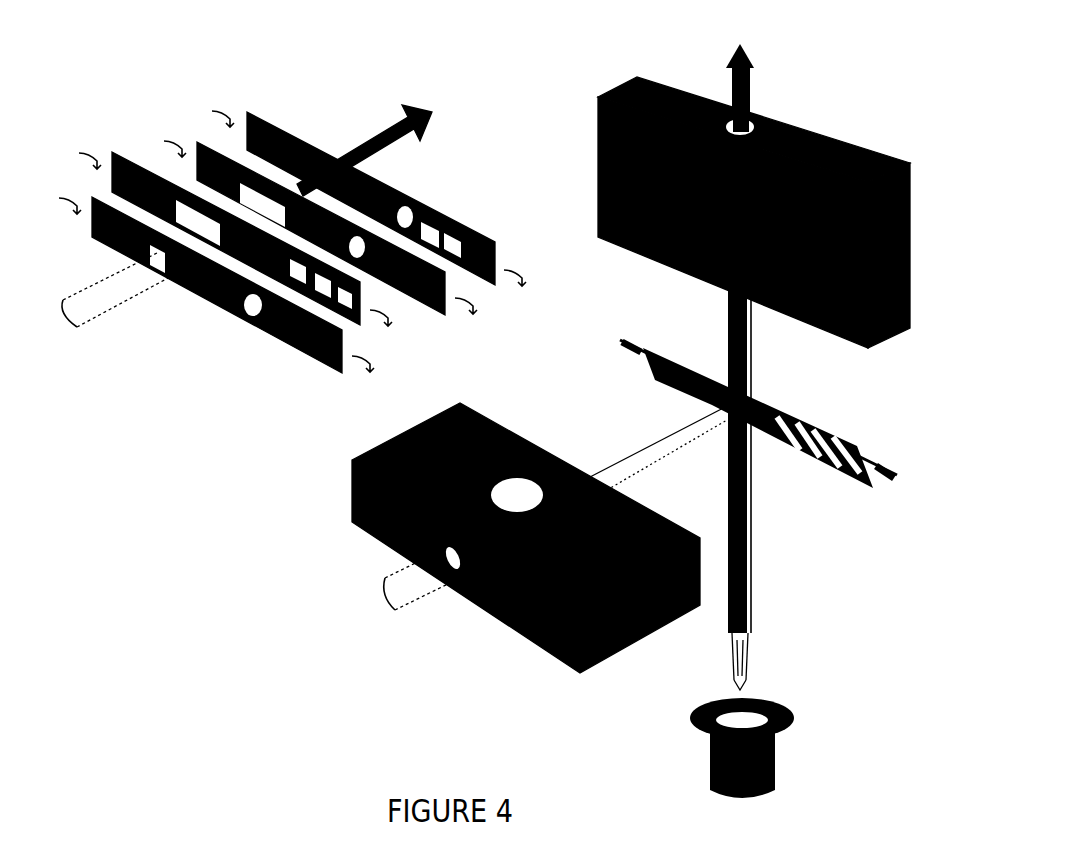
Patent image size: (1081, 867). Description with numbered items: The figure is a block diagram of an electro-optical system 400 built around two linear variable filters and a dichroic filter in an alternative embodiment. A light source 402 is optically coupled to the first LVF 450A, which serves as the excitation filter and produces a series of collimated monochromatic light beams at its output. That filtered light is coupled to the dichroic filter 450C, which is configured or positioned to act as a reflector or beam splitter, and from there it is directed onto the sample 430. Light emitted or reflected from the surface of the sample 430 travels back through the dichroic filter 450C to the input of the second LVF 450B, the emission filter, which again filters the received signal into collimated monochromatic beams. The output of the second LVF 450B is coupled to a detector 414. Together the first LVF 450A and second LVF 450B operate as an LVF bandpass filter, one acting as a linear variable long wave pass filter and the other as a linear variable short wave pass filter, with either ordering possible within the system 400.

The electro-optical system 400 is at (500, 90).
The light source 402 is at (403, 605).
The detector 414 is at (757, 74).
The sample 430 is at (781, 784).
The first LVF 450A is at (342, 482).
The second LVF 450B is at (916, 187).
The dichroic filter 450C is at (862, 437).